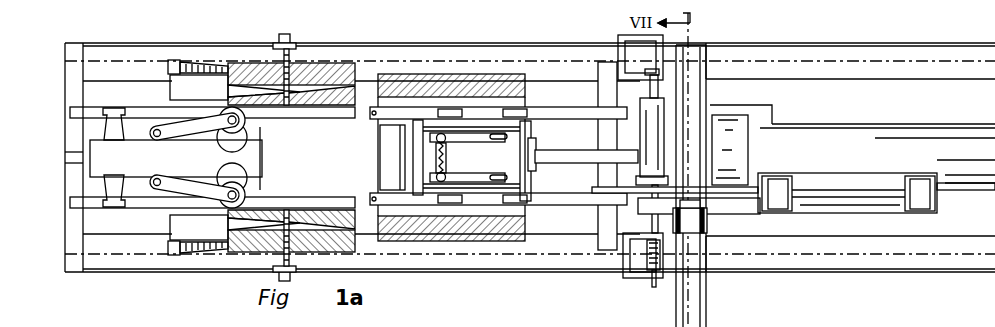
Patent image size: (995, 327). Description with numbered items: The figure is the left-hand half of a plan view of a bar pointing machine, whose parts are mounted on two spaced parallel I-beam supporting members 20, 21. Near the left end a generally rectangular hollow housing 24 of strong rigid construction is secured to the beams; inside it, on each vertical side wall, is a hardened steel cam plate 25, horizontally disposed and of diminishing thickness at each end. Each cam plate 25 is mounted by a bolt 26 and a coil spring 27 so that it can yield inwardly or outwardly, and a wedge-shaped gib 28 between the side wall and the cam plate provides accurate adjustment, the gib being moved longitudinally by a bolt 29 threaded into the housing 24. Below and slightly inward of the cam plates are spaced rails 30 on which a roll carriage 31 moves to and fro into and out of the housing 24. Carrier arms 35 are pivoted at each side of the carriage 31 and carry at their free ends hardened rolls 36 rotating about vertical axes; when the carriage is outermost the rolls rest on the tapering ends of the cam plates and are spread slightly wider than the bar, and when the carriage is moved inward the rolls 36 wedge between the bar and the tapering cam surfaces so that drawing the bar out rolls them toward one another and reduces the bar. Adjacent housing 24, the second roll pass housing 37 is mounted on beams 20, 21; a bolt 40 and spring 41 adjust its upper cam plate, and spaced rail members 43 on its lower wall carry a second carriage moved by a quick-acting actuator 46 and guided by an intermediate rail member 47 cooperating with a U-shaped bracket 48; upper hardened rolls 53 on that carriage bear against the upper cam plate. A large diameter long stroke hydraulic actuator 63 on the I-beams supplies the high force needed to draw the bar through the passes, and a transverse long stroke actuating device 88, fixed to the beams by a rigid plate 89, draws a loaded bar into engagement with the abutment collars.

The I-beam supporting member 20 is at (865, 46).
The I-beam supporting member 21 is at (959, 262).
The housing 24 is at (360, 255).
The cam plate 25 is at (313, 104).
The bolt 26 is at (291, 44).
The coil spring 27 is at (292, 73).
The wedge-shaped gib 28 is at (170, 89).
The bolt 29 is at (190, 60).
The rail 30 is at (291, 119).
The roll carriage 31 is at (160, 167).
The carrier arm 35 is at (180, 128).
The hardened roll 36 is at (246, 187).
The housing 37 is at (527, 101).
The bolt 40 is at (462, 326).
The spring 41 is at (462, 235).
The rail member 43 is at (573, 111).
The actuator 46 is at (893, 194).
The rail member 47 is at (571, 162).
The U-shaped bracket 48 is at (537, 154).
The upper hardened roll 53 is at (380, 149).
The hydraulic actuator 63 is at (885, 130).
The actuating device 88 is at (693, 302).
The plate 89 is at (704, 326).